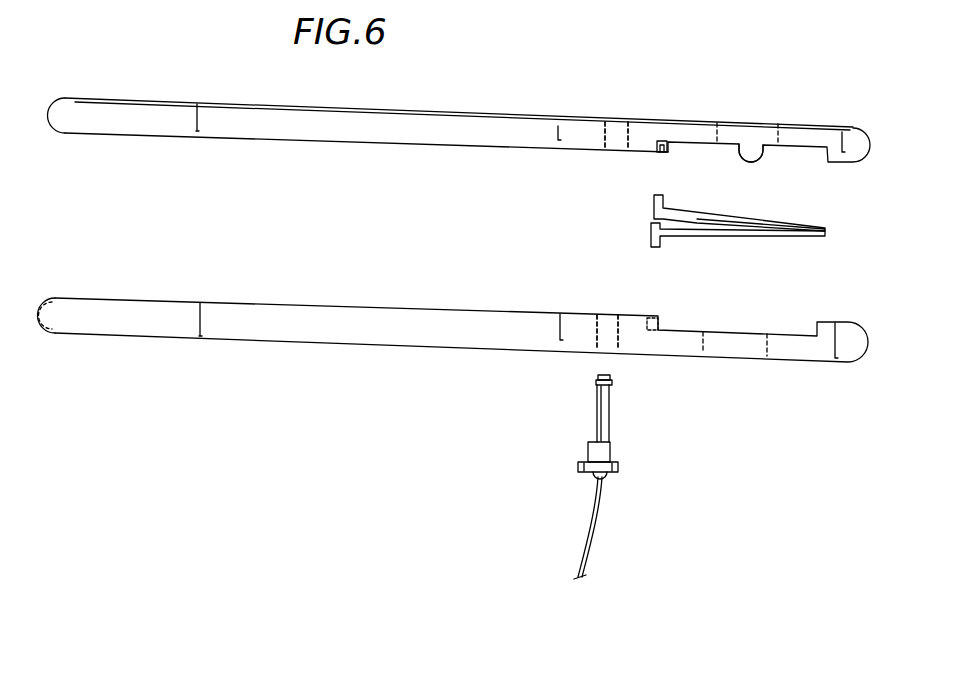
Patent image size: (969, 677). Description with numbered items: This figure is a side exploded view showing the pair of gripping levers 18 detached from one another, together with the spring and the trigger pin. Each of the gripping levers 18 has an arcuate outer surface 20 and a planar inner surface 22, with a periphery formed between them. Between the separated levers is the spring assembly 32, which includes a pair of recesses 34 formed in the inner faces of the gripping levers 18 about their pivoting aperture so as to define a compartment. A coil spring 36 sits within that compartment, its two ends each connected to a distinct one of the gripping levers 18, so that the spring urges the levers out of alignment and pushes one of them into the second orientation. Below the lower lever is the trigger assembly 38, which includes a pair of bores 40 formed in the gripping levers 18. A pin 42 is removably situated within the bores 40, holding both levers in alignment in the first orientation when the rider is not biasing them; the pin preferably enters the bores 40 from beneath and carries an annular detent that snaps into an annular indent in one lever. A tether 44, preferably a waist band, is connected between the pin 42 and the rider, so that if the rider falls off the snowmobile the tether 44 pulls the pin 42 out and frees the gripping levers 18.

The gripping levers 18 is at (90, 117).
The arcuate outer surface 20 is at (352, 108).
The planar inner surface 22 is at (423, 146).
The spring assembly 32 is at (779, 168).
The recesses 34 is at (765, 153).
The coil spring 36 is at (740, 223).
The trigger assembly 38 is at (614, 477).
The bores 40 is at (602, 134).
The pin 42 is at (597, 408).
The tether 44 is at (600, 506).